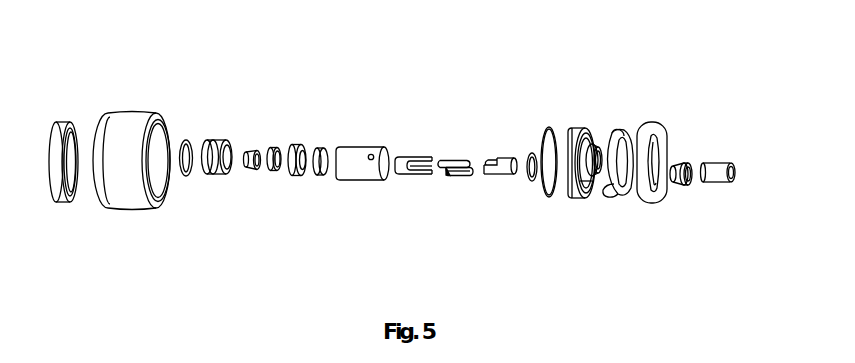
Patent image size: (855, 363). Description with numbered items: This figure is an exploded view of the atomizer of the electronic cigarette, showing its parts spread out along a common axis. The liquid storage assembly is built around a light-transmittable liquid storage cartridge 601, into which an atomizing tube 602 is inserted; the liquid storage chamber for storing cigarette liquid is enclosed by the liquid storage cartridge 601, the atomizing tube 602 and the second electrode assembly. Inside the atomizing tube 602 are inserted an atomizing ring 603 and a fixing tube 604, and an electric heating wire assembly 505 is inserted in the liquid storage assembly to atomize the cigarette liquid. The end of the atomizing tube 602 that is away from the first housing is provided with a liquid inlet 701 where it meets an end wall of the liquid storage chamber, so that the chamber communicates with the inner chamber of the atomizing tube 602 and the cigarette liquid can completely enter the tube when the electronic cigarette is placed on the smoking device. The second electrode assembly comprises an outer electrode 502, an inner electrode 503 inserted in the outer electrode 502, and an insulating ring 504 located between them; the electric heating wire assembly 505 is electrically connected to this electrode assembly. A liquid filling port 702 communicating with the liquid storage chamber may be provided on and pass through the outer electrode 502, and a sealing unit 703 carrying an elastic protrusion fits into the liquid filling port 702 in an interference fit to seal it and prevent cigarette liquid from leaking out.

The outer electrode 502 is at (219, 136).
The inner electrode 503 is at (251, 164).
The insulating ring 504 is at (274, 135).
The electric heating wire assembly 505 is at (457, 158).
The liquid storage cartridge 601 is at (124, 163).
The atomizing tube 602 is at (348, 162).
The atomizing ring 603 is at (299, 174).
The fixing tube 604 is at (412, 176).
The liquid inlet 701 is at (370, 153).
The liquid filling port 702 is at (581, 195).
The sealing unit 703 is at (621, 132).